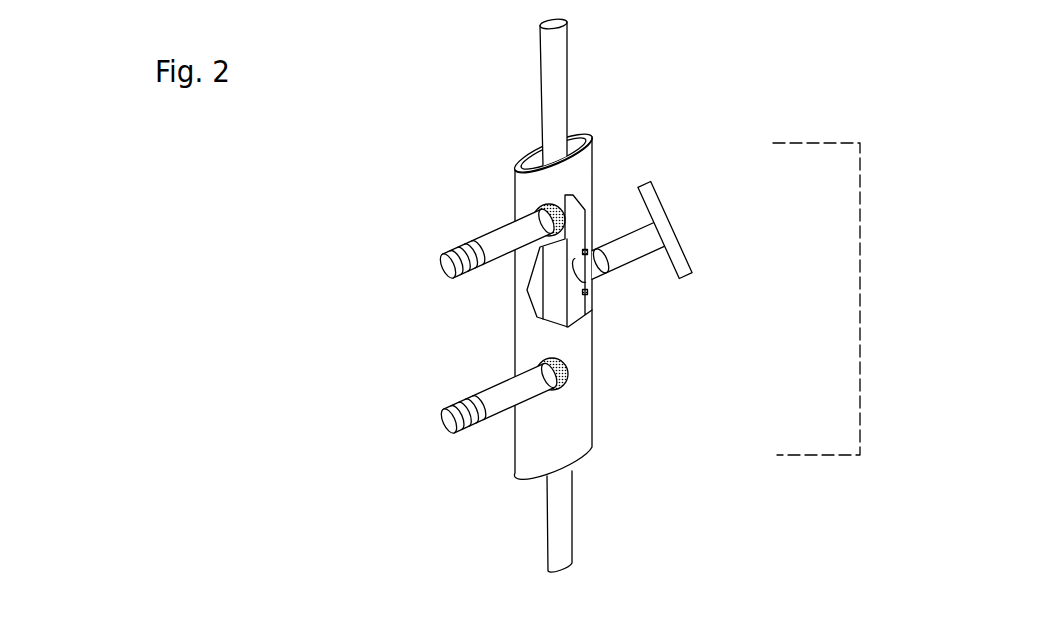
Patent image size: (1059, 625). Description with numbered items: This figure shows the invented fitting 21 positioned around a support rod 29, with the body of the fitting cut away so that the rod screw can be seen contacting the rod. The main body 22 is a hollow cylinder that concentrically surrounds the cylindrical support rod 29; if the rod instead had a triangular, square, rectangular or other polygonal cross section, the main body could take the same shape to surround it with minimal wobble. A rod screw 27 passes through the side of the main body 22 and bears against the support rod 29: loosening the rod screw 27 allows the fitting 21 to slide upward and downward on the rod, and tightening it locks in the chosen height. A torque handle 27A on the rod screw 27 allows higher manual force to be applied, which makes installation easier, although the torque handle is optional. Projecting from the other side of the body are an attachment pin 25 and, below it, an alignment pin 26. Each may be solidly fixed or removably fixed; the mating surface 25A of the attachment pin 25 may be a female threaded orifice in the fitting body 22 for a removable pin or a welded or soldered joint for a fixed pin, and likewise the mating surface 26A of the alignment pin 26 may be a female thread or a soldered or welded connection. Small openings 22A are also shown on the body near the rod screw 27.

The fitting 21 is at (891, 243).
The main body 22 is at (567, 444).
The apertures in sleeve 22A is at (590, 257).
The attachment pin 25 is at (467, 233).
The mating surface 25A is at (531, 204).
The alignment pin 26 is at (467, 383).
The mating surface 26A is at (569, 378).
The rod screw 27 is at (640, 276).
The torque handle 27A is at (699, 244).
The support rod 29 is at (554, 87).